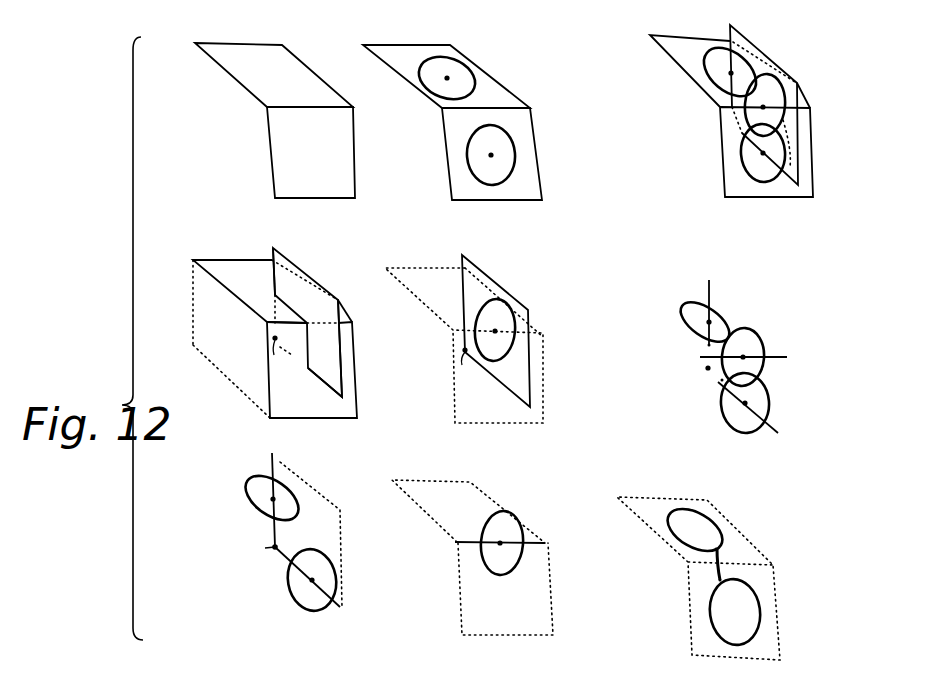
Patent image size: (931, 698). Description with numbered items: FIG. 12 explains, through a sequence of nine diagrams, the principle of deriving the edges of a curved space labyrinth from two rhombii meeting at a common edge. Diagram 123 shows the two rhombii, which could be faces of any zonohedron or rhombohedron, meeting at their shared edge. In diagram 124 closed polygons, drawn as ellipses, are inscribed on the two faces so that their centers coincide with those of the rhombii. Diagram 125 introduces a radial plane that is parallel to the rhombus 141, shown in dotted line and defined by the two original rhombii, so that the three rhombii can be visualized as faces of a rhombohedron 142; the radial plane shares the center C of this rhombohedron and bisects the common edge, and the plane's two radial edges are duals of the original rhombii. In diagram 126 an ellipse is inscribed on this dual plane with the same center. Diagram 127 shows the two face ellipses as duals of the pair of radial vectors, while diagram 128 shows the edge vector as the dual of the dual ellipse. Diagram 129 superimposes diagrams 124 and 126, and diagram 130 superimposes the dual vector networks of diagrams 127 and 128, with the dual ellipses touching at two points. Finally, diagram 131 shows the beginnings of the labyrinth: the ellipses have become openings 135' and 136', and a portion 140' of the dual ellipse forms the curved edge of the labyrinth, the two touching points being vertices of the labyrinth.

The illustration of two rhombii meeting at an edge 123 is at (205, 147).
The illustration with inscribed closed polygons 124 is at (432, 175).
The illustration introducing the radial plane 125 is at (185, 385).
The illustration of ellipse inscribed on the dual plane 126 is at (427, 392).
The illustration of ellipses dual to radial vectors 127 is at (227, 585).
The illustration of edge vector dual to the dual ellipse 128 is at (440, 605).
The superimposition of the two earlier diagrams 129 is at (677, 182).
The superimposition of the dual vector networks 130 is at (657, 398).
The illustration of the beginnings of the labyrinth 131 is at (662, 625).
The rhombus 141 is at (197, 329).
The rhombohedron 142 is at (227, 377).
The opening 135' is at (717, 529).
The opening 136' is at (763, 612).
The curved edge of the labyrinth 140' is at (761, 558).